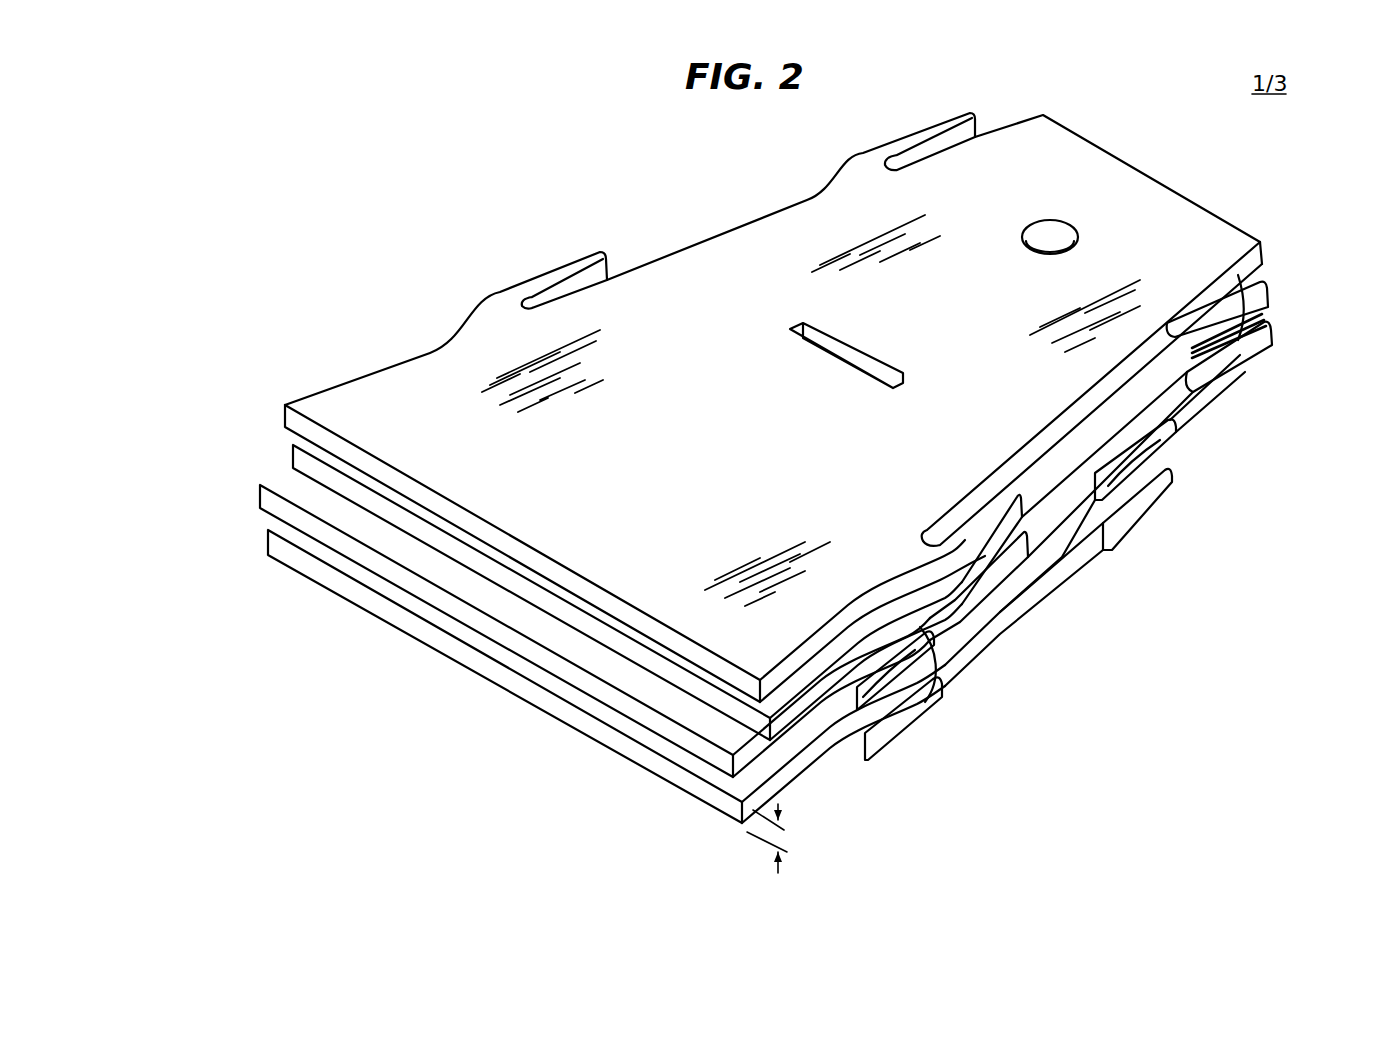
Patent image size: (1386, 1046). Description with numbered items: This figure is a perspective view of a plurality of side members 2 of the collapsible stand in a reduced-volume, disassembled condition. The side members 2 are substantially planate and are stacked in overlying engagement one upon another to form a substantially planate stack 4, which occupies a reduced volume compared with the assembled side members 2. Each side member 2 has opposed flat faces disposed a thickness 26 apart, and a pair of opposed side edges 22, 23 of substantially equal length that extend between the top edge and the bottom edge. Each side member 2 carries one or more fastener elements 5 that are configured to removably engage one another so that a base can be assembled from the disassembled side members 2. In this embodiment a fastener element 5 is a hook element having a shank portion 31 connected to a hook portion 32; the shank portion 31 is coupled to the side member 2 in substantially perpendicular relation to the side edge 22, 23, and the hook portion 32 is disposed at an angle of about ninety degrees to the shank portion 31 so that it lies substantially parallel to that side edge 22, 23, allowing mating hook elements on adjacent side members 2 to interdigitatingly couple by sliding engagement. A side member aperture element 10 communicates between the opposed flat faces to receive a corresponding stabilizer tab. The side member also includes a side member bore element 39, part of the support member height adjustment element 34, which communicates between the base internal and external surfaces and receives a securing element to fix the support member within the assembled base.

The side member 2 is at (257, 531).
The planate stack 4 is at (172, 375).
The fastener element 5 is at (1263, 342).
The side member aperture element 10 is at (867, 352).
The side edge 22 is at (780, 213).
The side edge 23 is at (898, 582).
The thickness 26 is at (787, 850).
The shank portion 31 is at (485, 318).
The hook portion 32 is at (577, 264).
The support member height adjustment element 34 is at (1062, 218).
The side member bore element 39 is at (1050, 237).